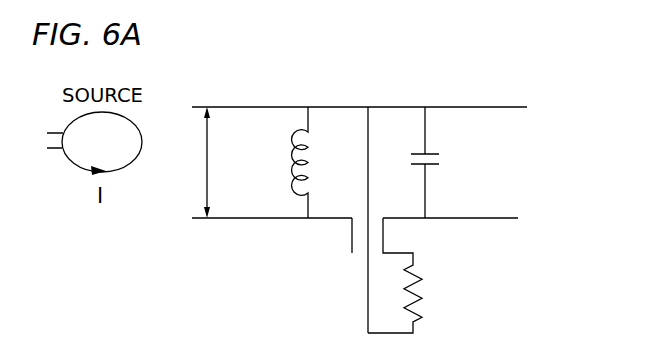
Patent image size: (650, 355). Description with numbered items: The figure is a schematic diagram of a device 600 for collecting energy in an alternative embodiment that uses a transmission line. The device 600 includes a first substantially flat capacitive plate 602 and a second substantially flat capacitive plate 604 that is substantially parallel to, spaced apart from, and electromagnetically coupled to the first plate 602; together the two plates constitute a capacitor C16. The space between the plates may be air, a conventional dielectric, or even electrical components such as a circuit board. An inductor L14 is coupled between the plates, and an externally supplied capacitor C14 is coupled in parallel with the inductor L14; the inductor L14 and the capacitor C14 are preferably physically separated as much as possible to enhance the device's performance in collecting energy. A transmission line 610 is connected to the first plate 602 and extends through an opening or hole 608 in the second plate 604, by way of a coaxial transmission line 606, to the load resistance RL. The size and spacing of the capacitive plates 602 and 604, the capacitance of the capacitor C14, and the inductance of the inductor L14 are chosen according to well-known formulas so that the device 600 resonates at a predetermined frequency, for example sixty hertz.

The device for collecting energy 600 is at (235, 82).
The first substantially flat capacitive plate 602 is at (482, 107).
The second substantially flat capacitive plate 604 is at (222, 222).
The coaxial transmission line 606 is at (350, 233).
The opening or hole 608 is at (375, 217).
The transmission line 610 is at (366, 283).
The capacitor C16 is at (208, 162).
The inductor L14 is at (278, 162).
The externally supplied capacitor C14 is at (449, 162).
The load resistance RL is at (442, 298).